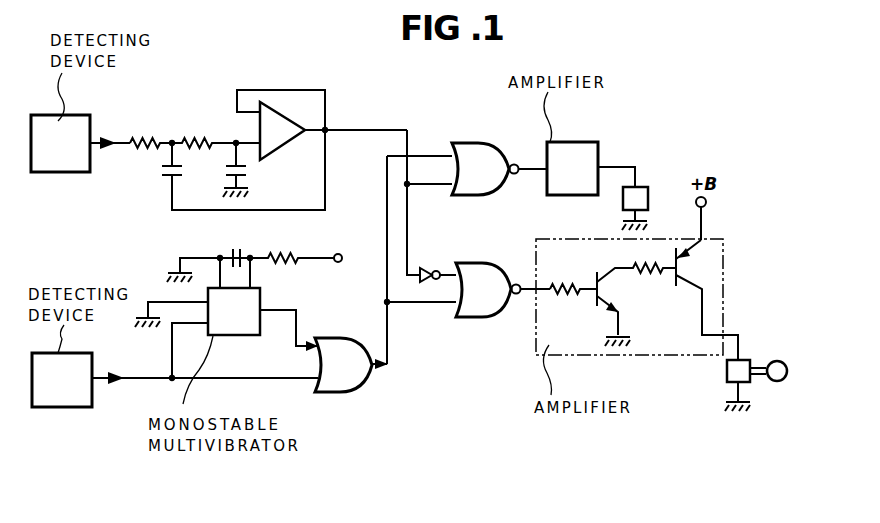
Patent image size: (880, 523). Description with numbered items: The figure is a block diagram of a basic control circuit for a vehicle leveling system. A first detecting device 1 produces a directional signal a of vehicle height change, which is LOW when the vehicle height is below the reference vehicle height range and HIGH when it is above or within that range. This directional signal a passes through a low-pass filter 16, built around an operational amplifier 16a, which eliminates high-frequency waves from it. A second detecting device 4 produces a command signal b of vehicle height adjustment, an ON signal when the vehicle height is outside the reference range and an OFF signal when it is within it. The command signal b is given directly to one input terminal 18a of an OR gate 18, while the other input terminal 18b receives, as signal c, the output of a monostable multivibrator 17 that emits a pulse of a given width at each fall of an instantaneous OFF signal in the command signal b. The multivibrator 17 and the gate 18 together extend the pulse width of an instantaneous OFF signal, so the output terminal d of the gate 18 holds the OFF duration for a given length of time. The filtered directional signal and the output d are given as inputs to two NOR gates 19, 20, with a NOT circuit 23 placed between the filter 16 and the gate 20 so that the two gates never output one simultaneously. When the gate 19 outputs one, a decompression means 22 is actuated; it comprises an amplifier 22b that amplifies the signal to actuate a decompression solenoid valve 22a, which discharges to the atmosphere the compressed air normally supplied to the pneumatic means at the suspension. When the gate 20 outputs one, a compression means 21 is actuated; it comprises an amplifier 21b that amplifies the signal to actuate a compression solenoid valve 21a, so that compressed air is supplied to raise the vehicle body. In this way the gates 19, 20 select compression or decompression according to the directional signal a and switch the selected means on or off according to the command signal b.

The first detecting device 1 is at (41, 172).
The second detecting device 4 is at (51, 410).
The low-pass filter 16 is at (216, 134).
The operational amplifier 16a is at (273, 101).
The monostable multivibrator 17 is at (214, 335).
The OR gate 18 is at (341, 392).
The input terminal 18a is at (306, 383).
The input terminal 18b is at (310, 342).
The NOR gate 19 is at (472, 146).
The NOR gate 20 is at (476, 318).
The compression means 21 is at (774, 362).
The compression solenoid valve 21a is at (727, 371).
The amplifier 21b is at (573, 359).
The decompression means 22 is at (618, 156).
The decompression solenoid valve 22a is at (648, 194).
The amplifier 22b is at (573, 142).
The NOT circuit 23 is at (426, 267).
The directional signal a is at (102, 131).
The command signal b is at (104, 378).
The multivibrator output signal c is at (296, 347).
The output terminal d is at (371, 370).